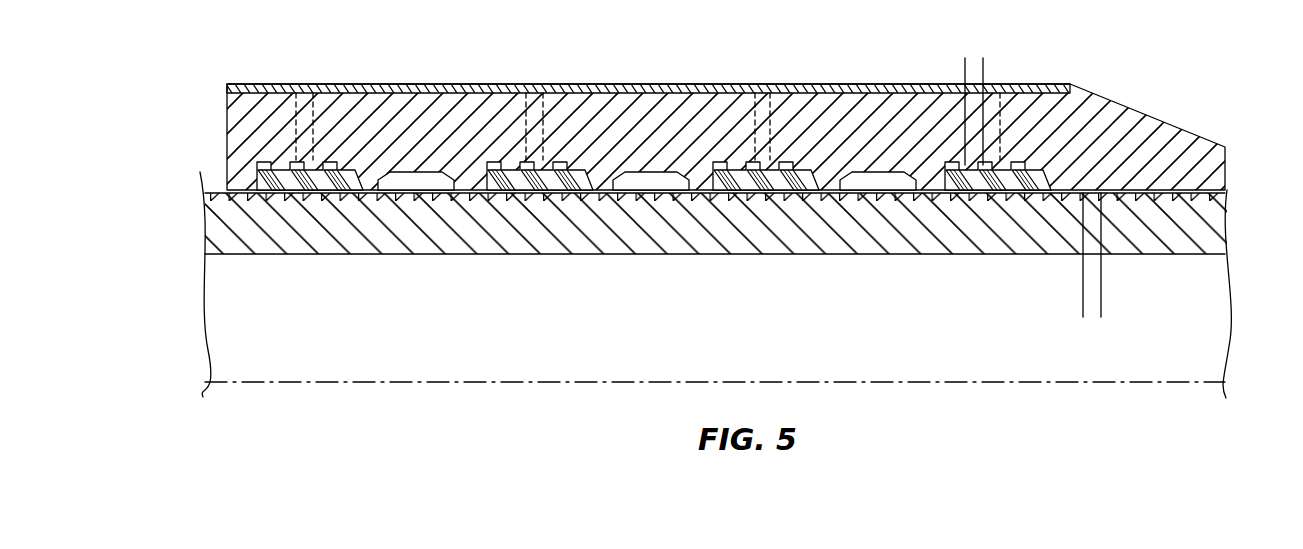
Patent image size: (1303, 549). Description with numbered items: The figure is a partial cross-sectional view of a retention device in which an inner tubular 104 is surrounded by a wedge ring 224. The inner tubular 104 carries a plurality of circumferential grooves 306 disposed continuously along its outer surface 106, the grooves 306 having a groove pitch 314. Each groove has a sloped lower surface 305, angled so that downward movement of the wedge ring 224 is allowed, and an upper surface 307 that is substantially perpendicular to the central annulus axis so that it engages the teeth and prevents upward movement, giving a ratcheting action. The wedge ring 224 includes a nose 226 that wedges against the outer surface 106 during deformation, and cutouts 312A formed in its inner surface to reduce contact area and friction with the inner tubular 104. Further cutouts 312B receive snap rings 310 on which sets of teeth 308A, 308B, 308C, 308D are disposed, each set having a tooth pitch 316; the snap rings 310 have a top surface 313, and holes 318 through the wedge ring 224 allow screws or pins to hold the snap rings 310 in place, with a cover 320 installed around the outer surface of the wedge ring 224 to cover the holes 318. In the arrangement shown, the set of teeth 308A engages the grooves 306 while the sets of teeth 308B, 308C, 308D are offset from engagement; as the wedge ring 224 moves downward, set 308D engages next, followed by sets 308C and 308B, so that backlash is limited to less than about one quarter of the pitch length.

The inner tubular 104 is at (668, 243).
The outer surface 106 is at (905, 200).
The wedge ring 224 is at (710, 109).
The nose 226 is at (1173, 149).
The lower surface 305 is at (480, 196).
The circumferential grooves 306 is at (890, 203).
The upper surface 307 is at (455, 200).
The set of teeth 308A is at (355, 178).
The set of teeth 308B is at (590, 163).
The set of teeth 308C is at (810, 163).
The set of teeth 308D is at (1050, 163).
The snap rings 310 is at (330, 168).
The cutouts 312A is at (418, 172).
The cutouts 312B is at (568, 163).
The top surface 313 is at (268, 163).
The groove pitch 314 is at (1130, 310).
The tooth pitch 316 is at (1012, 62).
The holes 318 is at (770, 84).
The cover 320 is at (268, 84).